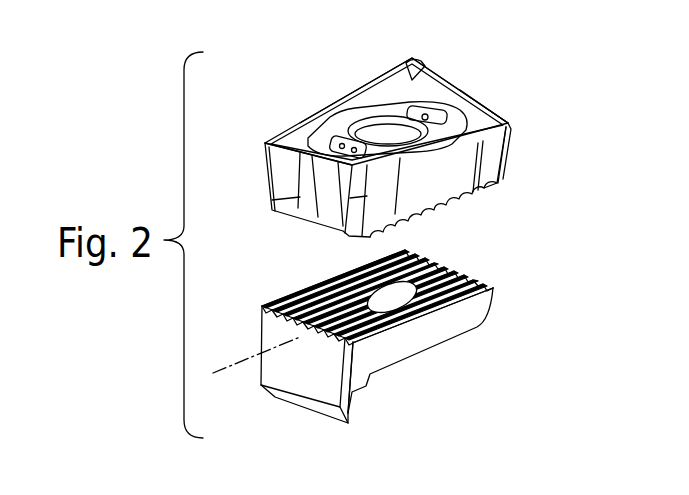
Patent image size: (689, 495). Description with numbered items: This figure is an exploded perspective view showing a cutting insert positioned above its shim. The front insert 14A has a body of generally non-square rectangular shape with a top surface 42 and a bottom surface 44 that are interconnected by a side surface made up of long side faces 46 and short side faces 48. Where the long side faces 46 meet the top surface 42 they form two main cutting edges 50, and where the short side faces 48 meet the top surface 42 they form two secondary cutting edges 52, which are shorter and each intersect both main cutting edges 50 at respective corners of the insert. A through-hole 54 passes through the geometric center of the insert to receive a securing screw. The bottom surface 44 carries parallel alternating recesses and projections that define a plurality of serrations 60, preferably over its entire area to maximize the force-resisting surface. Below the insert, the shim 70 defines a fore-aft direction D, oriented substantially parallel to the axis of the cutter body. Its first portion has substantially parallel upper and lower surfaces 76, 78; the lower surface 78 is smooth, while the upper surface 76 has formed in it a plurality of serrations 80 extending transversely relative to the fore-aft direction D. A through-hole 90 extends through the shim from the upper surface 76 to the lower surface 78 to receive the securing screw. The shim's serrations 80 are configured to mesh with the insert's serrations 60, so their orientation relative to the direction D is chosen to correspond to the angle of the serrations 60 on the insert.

The front insert 14A is at (282, 119).
The top surface 42 is at (440, 87).
The bottom surface 44 is at (490, 188).
The long side faces 46 is at (452, 176).
The short side faces 48 is at (303, 195).
The main cutting edges 50 is at (379, 76).
The secondary cutting edges 52 is at (483, 98).
The through-hole 54 is at (370, 128).
The serrations 60 is at (441, 206).
The shim 70 is at (488, 320).
The upper surface 76 is at (443, 273).
The lower surface 78 is at (420, 338).
The serrations 80 is at (283, 307).
The through-hole 90 is at (392, 300).
The fore-aft direction D is at (236, 362).